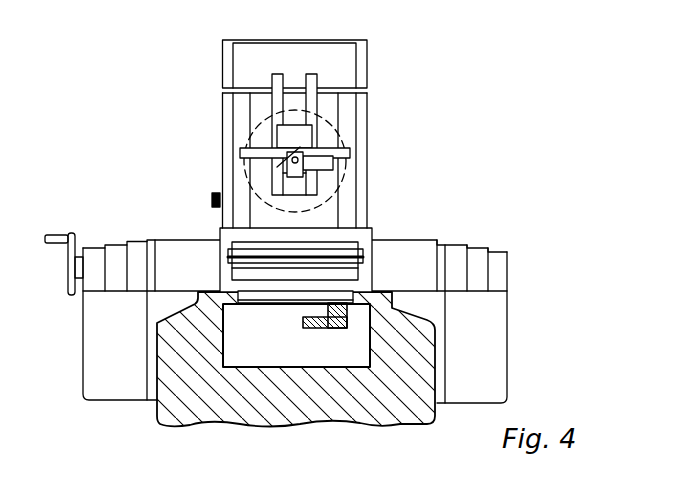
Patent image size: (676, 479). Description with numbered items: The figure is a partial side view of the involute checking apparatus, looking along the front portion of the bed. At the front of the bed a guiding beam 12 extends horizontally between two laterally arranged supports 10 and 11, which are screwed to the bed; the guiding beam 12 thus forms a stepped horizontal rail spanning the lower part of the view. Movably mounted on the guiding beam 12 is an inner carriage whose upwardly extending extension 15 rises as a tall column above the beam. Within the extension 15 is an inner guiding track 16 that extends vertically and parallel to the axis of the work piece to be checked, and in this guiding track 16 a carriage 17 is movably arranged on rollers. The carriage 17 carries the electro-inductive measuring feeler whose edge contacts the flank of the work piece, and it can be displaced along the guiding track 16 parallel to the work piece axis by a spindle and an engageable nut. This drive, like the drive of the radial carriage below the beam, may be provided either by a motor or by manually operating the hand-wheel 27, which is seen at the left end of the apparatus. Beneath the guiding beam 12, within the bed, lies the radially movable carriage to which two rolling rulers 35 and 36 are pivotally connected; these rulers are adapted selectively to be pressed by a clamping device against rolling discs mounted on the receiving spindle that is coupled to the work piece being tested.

The support 10 is at (493, 335).
The support 11 is at (95, 357).
The guiding beam 12 is at (187, 250).
The upwardly extending extension 15 is at (357, 197).
The inner guiding track 16 is at (284, 80).
The carriage 17 is at (295, 133).
The hand-wheel 27 is at (70, 262).
The rolling ruler 35 is at (347, 314).
The rolling ruler 36 is at (325, 328).